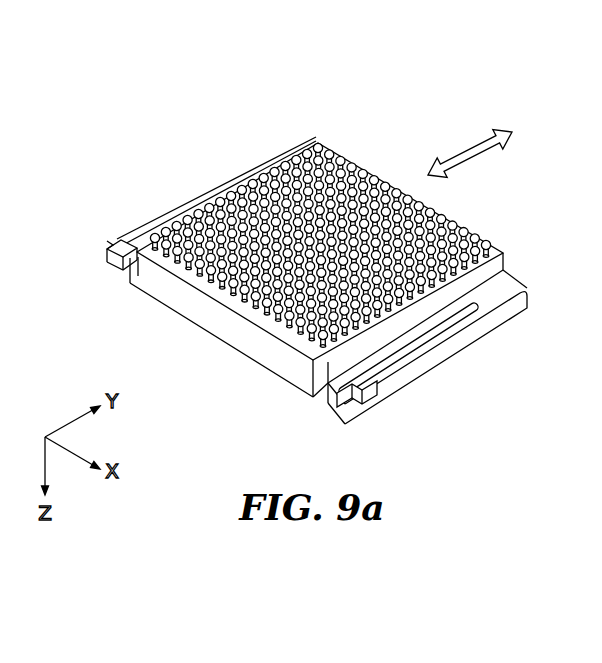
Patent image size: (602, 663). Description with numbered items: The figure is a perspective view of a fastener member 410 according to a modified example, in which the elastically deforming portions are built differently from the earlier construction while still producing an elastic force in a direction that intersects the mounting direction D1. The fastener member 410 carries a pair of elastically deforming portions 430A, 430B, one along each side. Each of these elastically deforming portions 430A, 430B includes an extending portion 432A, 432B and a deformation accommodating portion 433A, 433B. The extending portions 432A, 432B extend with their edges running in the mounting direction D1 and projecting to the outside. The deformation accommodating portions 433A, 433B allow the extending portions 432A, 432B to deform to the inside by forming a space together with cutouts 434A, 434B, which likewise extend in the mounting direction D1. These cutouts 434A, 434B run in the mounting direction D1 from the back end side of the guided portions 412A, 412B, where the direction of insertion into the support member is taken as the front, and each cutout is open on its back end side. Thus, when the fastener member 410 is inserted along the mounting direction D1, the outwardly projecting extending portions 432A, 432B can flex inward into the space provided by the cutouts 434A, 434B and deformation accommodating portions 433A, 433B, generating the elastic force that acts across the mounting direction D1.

The fastener member 410 is at (274, 116).
The guided portion 412A is at (519, 273).
The guided portion 412B is at (119, 222).
The elastically deforming portion 430A is at (450, 363).
The elastically deforming portion 430B is at (136, 215).
The extending portion 432A is at (373, 383).
The extending portion 432B is at (104, 234).
The deformation accommodating portion 433A is at (323, 405).
The deformation accommodating portion 433B is at (124, 283).
The cutout 434A is at (306, 371).
The cutout 434B is at (141, 228).
The mounting direction D1 is at (475, 155).